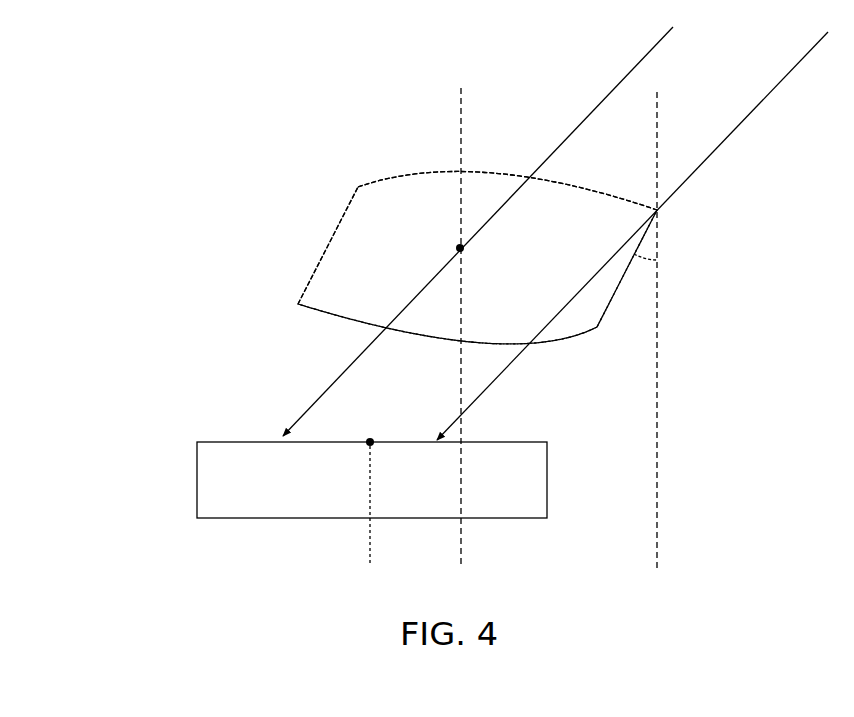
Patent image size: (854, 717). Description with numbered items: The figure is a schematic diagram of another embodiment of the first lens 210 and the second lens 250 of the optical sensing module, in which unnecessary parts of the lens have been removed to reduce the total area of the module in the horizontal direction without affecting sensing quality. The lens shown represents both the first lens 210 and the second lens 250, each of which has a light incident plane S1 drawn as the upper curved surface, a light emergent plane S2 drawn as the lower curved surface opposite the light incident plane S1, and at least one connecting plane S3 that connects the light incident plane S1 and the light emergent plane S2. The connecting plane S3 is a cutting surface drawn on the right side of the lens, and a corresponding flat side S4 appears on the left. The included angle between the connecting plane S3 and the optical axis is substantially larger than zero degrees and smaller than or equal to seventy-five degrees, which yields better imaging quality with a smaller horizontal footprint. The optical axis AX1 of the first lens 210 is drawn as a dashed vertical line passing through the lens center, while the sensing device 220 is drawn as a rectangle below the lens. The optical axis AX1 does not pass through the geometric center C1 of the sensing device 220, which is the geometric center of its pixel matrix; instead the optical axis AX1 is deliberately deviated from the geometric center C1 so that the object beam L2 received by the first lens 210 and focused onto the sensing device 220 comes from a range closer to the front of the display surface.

The first lens 210 is at (376, 234).
The second lens 250 is at (390, 192).
The light incident plane S1 is at (428, 176).
The light emergent plane S2 is at (315, 319).
The connecting plane S3 is at (601, 323).
The fourth surface of lens S4 is at (325, 253).
The object beam L2 is at (692, 172).
The optical axis AX1 is at (461, 553).
The sensing device 220 is at (223, 468).
The geometric center C1 is at (368, 443).